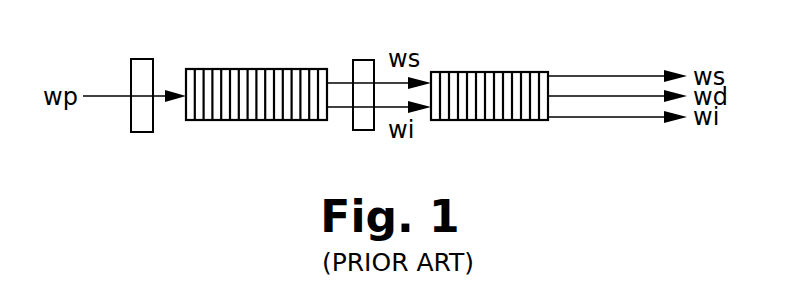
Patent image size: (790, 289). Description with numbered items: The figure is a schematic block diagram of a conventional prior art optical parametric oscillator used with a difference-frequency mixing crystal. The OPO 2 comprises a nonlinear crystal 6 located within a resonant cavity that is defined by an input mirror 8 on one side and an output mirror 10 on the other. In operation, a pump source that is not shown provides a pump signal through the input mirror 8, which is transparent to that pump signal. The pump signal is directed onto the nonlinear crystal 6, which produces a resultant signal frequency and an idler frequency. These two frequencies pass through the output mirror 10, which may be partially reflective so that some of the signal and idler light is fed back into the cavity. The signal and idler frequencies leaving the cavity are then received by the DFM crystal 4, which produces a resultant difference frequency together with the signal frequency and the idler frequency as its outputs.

The OPO 2 is at (256, 111).
The DFM crystal 4 is at (482, 72).
The nonlinear crystal 6 is at (240, 69).
The input mirror 8 is at (141, 58).
The output mirror 10 is at (361, 60).